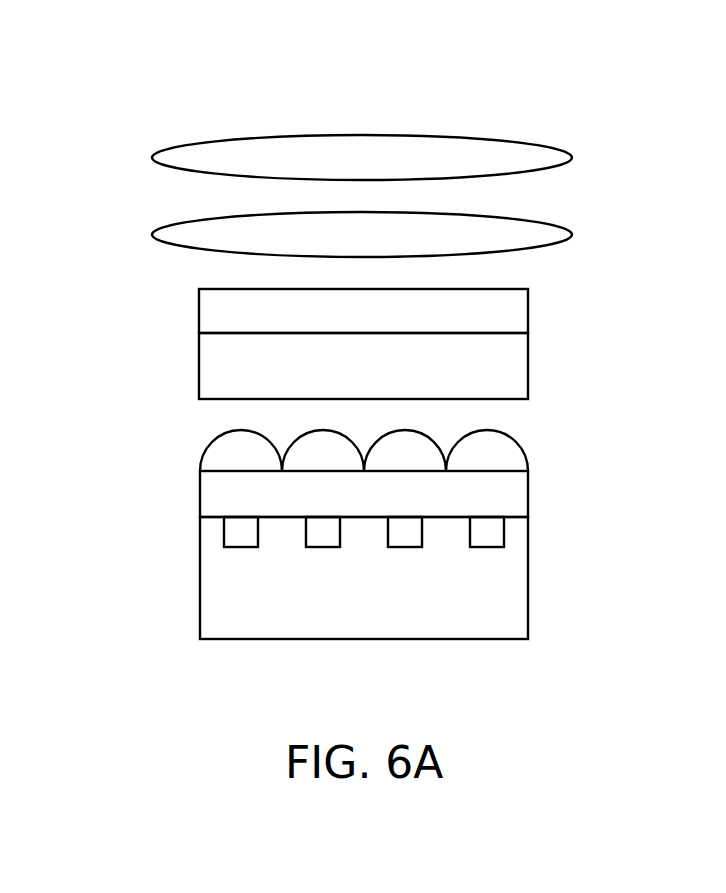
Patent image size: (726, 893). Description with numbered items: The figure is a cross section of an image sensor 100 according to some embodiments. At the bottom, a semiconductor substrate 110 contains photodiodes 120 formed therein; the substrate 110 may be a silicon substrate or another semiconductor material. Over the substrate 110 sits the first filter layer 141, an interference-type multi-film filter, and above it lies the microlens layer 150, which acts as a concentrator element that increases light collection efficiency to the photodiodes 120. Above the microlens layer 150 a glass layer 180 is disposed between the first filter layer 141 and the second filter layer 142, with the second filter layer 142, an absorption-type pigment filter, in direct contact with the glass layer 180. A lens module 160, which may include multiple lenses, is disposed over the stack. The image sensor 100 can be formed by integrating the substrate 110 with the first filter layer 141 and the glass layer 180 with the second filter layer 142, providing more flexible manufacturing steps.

The image sensor 100 is at (181, 106).
The lens module 160 is at (575, 193).
The second filter layer 142 is at (507, 312).
The glass layer 180 is at (507, 367).
The microlens layer 150 is at (498, 448).
The first filter layer 141 is at (508, 492).
The photodiode 120 is at (487, 533).
The semiconductor substrate 110 is at (508, 594).